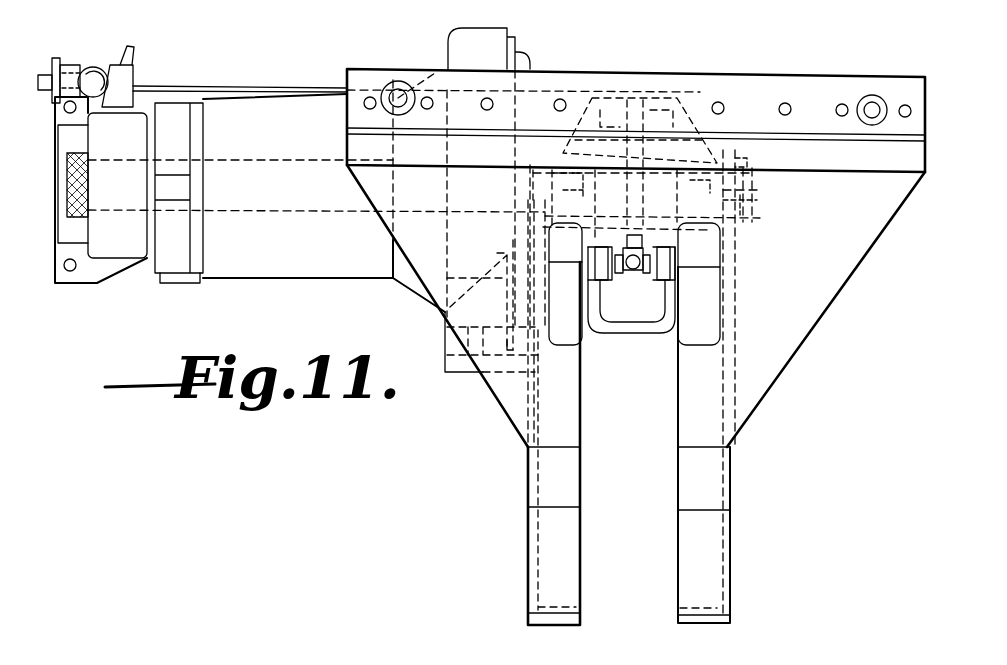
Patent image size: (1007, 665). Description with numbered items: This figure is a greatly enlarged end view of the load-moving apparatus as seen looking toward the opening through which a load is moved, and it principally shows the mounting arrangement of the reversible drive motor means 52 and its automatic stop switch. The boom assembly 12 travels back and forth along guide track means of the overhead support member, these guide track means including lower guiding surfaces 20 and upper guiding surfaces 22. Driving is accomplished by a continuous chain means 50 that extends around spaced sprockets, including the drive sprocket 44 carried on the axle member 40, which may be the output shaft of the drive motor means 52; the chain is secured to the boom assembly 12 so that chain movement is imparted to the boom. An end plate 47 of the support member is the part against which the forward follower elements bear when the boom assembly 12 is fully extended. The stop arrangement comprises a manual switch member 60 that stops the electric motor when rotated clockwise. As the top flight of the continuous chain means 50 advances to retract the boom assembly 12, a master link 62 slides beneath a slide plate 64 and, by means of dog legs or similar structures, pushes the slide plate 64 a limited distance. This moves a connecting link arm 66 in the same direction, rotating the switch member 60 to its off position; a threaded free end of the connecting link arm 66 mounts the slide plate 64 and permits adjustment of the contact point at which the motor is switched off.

The boom assembly 12 is at (611, 330).
The lower guiding surfaces 20 is at (555, 598).
The upper guiding surfaces 22 is at (545, 198).
The axle member 40 is at (757, 203).
The drive sprocket 44 is at (637, 273).
The end plate 47 is at (552, 577).
The continuous chain means 50 is at (630, 273).
The reversible drive motor means 52 is at (292, 250).
The manual switch member 60 is at (63, 277).
The master link 62 is at (693, 110).
The slide plate 64 is at (282, 90).
The connecting link arm 66 is at (92, 83).